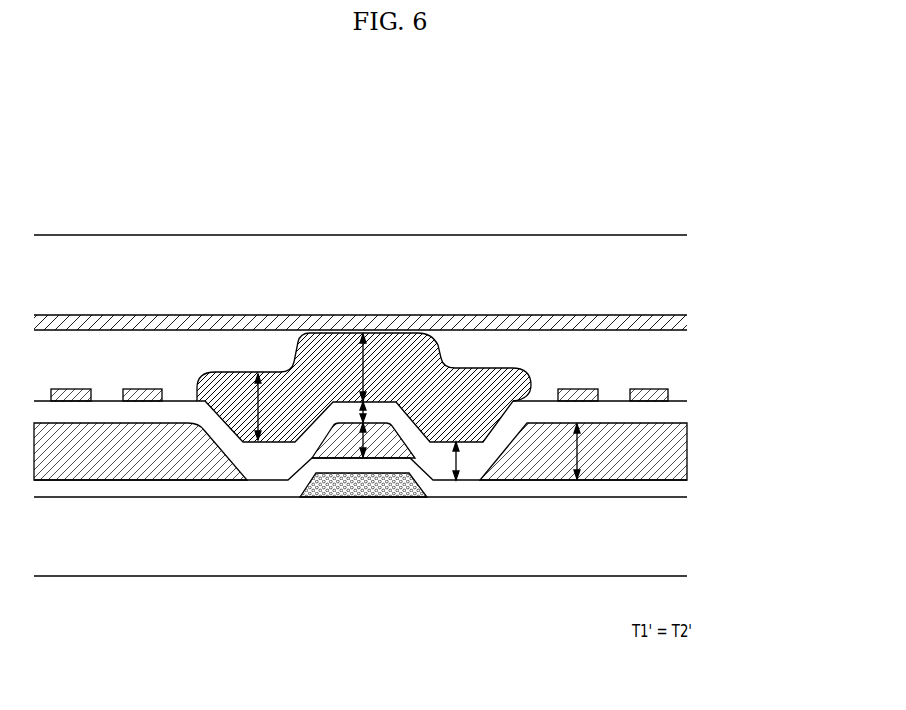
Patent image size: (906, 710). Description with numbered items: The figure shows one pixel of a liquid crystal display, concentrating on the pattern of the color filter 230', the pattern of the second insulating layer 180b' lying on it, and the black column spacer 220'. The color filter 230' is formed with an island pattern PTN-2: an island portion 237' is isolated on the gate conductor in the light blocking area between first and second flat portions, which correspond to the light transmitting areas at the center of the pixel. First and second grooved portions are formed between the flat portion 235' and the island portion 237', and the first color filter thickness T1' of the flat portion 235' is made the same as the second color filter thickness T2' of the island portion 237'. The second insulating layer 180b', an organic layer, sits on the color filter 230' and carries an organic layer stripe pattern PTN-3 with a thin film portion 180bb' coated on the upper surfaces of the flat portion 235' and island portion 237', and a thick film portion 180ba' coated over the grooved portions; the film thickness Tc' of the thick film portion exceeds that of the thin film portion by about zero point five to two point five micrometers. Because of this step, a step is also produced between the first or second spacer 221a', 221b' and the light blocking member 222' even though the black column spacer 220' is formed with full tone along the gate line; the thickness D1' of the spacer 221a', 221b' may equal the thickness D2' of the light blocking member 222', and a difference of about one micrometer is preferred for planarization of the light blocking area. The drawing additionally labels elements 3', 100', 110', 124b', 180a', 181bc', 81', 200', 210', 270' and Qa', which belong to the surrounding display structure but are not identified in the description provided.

The filling layer 3' is at (385, 294).
The display substrate 100' is at (395, 488).
The substrate 110' is at (360, 558).
The gate electrode pattern 124b' is at (363, 546).
The first insulating layer 180a' is at (408, 479).
The second insulating layer 180b' is at (408, 413).
The thick film portion 180ba' is at (279, 509).
The thin film portion 180bb' is at (330, 305).
The insulating layer portion 181bc' is at (600, 385).
The spacer pattern 81' is at (359, 374).
The encapsulation substrate 200' is at (395, 275).
The encapsulation base substrate 210' is at (360, 215).
The black column spacer 220' is at (364, 274).
The first spacer 221a' is at (364, 296).
The second spacer 221b' is at (364, 296).
The light blocking member 222' is at (485, 296).
The color filter 230' is at (360, 539).
The flat portion 235' is at (140, 520).
The island portion 237' is at (263, 527).
The color filter layer 270' is at (360, 258).
The thickness of first or second spacer D1' is at (348, 294).
The thickness of light blocking member D2' is at (246, 313).
The first color filter thickness T1' is at (589, 451).
The second color filter thickness T2' is at (375, 440).
The film thickness Tc' is at (422, 441).
The transistor Qa' is at (366, 547).
The island pattern PTN-2 is at (335, 447).
The organic layer stripe pattern PTN-3 is at (523, 418).